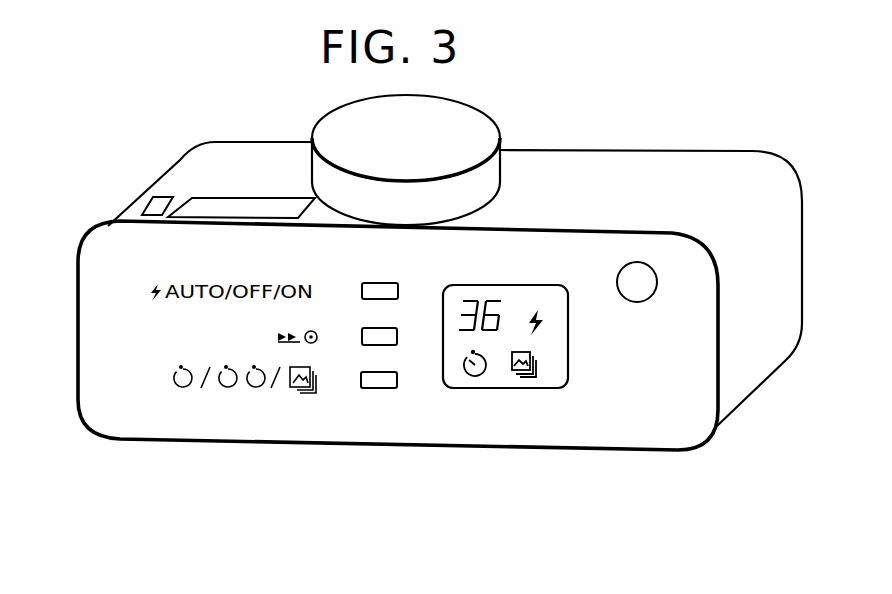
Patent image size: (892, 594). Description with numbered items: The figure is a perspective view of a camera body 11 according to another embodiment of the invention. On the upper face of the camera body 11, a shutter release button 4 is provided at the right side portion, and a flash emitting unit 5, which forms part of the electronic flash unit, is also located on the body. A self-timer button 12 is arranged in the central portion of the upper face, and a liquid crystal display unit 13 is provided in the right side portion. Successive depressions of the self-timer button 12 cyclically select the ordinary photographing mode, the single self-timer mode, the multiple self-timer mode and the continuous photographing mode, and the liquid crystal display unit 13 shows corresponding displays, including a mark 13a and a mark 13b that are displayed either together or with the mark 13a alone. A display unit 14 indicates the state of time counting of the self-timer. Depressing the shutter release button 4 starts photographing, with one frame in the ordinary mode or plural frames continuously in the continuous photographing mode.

The shutter release button 4 is at (650, 278).
The flash emitting unit 5 is at (192, 201).
The camera body 11 is at (113, 427).
The self-timer button 12 is at (385, 386).
The liquid crystal display unit 13 is at (488, 390).
The mark 13a is at (489, 367).
The mark 13b is at (533, 375).
The display unit 14 is at (145, 211).